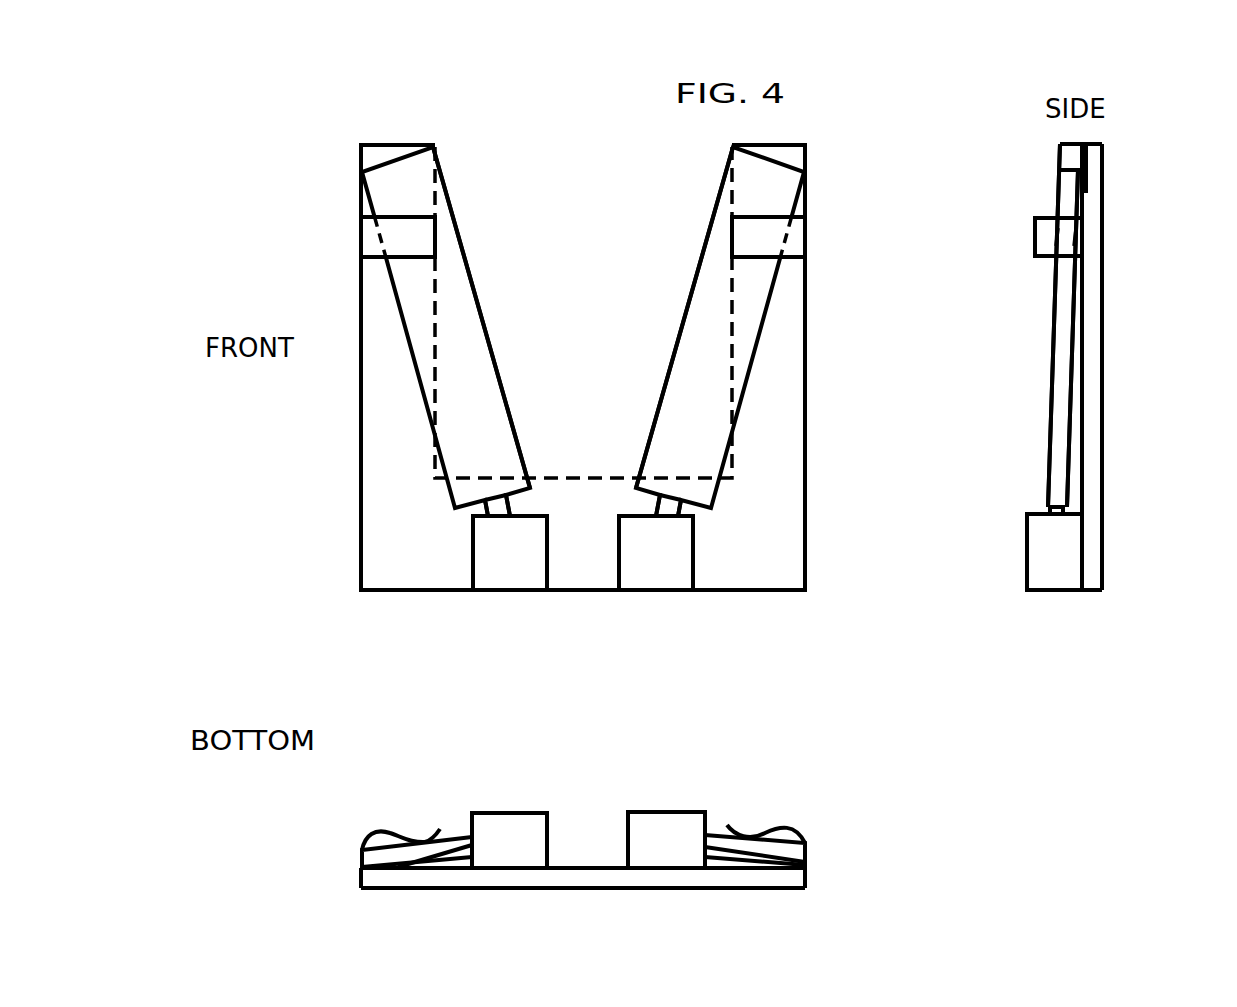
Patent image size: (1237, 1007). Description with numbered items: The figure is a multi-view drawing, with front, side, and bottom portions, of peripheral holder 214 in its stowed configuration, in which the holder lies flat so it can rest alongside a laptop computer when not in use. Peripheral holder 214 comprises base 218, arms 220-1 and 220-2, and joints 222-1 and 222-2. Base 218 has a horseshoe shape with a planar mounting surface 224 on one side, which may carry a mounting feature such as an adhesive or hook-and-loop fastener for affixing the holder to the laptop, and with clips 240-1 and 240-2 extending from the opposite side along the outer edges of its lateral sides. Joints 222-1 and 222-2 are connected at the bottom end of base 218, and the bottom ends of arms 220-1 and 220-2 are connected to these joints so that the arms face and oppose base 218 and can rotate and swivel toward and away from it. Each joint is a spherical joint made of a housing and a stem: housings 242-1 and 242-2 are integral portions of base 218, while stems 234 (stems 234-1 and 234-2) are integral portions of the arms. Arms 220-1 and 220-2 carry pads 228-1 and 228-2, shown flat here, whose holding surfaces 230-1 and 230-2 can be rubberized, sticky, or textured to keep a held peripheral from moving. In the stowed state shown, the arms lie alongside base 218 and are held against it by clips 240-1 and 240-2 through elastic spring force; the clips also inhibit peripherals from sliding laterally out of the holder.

The peripheral holder 214 is at (312, 128).
The base 218 is at (358, 290).
The arm 220-1 is at (463, 248).
The arm 220-2 is at (712, 210).
The joint 222-1 is at (507, 592).
The joint 222-2 is at (660, 593).
The mounting surface 224 is at (1103, 365).
The pad 228-1 is at (497, 357).
The pad 228-2 is at (687, 303).
The holding surface 230-1 is at (463, 862).
The holding surface 230-2 is at (1073, 383).
The stems 234 is at (1045, 507).
The stem 234-1 is at (482, 504).
The stem 234-2 is at (656, 500).
The clip 240-1 is at (358, 235).
The clip 240-2 is at (783, 233).
The housing 242-1 is at (470, 552).
The housing 242-2 is at (641, 592).